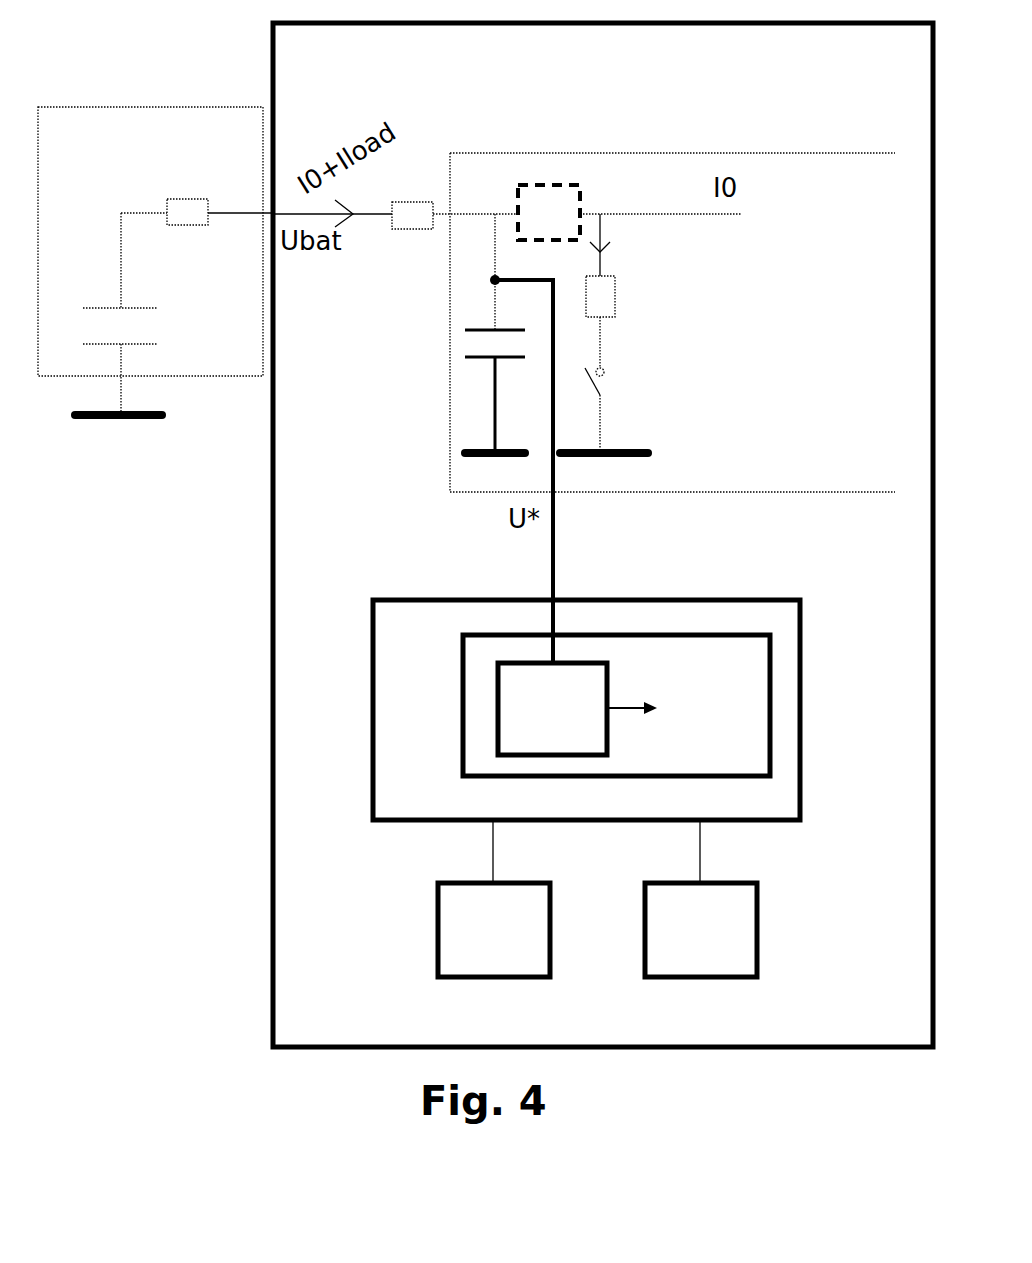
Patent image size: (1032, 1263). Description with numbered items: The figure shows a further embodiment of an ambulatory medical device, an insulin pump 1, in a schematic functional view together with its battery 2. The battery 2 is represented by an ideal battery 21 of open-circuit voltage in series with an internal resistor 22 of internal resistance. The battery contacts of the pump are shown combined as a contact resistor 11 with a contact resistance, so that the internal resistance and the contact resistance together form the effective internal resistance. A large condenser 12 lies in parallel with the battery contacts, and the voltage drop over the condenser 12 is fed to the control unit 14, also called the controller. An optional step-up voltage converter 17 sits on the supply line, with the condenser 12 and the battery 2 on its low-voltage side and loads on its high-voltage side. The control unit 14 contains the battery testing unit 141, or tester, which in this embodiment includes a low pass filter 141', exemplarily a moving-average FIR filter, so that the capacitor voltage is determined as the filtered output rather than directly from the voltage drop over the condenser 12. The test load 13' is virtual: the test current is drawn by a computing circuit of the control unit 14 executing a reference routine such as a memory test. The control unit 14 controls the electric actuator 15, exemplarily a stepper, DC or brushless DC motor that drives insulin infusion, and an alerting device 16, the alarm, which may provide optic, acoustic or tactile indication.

The insulin pump 1 is at (290, 1053).
The battery 2 is at (221, 385).
The ideal battery 21 is at (67, 325).
The internal resistor 22 is at (193, 158).
The contact resistor 11 is at (408, 288).
The condenser 12 is at (475, 367).
The test load 13' is at (627, 333).
The step-up voltage converter 17 is at (567, 198).
The control unit 14 is at (373, 800).
The battery testing unit 141 is at (676, 705).
The low pass filter 141' is at (497, 709).
The electric actuator 15 is at (550, 940).
The alerting device 16 is at (757, 940).